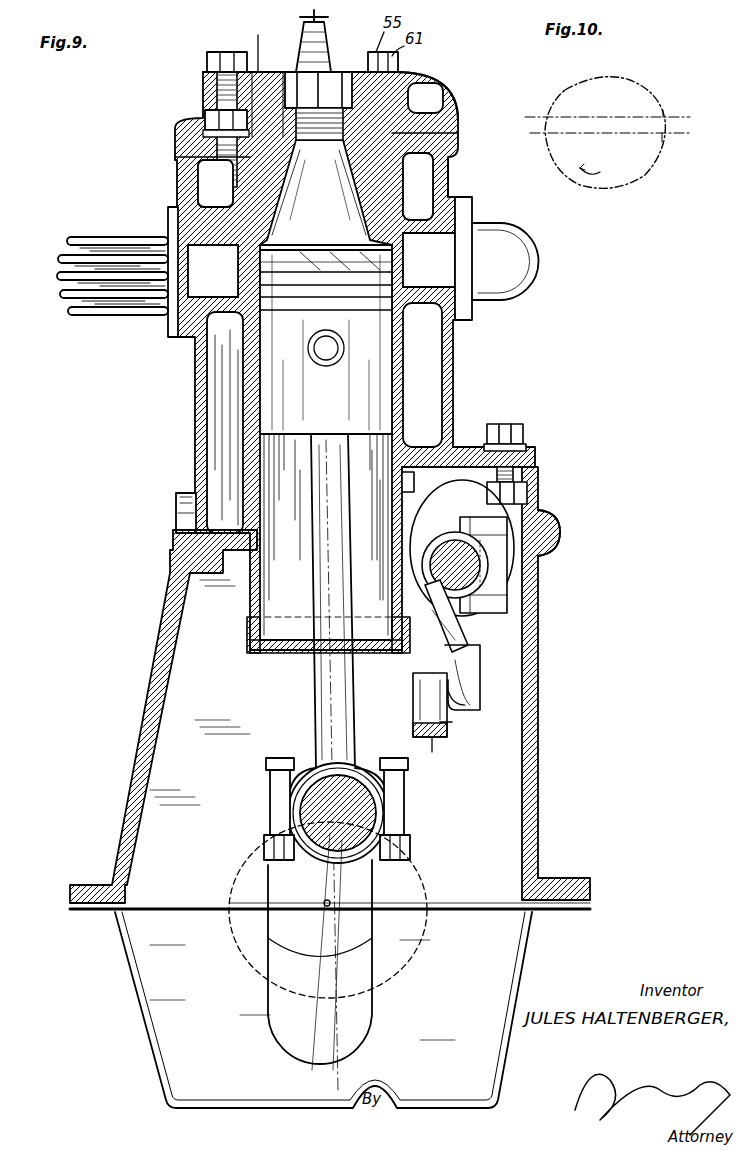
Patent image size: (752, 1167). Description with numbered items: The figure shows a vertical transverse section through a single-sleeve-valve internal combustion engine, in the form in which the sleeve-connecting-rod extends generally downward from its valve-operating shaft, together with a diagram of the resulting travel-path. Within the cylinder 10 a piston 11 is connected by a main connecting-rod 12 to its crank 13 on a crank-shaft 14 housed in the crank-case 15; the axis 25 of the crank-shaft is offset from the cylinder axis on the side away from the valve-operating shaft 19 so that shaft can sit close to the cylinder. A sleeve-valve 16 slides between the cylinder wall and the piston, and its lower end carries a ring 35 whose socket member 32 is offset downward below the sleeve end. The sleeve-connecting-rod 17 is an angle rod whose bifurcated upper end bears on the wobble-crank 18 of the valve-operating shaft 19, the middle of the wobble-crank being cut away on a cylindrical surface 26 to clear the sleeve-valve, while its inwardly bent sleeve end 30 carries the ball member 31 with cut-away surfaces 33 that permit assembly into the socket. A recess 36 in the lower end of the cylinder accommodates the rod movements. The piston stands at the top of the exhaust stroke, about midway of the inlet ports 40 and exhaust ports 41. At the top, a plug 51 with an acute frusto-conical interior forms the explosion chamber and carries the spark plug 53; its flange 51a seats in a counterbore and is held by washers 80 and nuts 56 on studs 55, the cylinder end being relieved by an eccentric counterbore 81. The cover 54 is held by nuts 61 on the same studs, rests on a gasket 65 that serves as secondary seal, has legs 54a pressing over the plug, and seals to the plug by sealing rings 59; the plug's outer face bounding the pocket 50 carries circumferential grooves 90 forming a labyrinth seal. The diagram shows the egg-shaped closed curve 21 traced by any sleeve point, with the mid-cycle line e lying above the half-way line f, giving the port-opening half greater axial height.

In FIG. 9, the cylinder 10 is at (402, 392).
In FIG. 9, the piston 11 is at (326, 342).
In FIG. 9, the main connecting-rod 12 is at (318, 716).
In FIG. 9, the crank 13 is at (398, 815).
In FIG. 9, the crank-shaft 14 is at (380, 922).
In FIG. 9, the crank-case 15 is at (545, 822).
In FIG. 9, the sleeve-valve 16 is at (250, 590).
In FIG. 9, the sleeve-connecting-rod 17 is at (483, 686).
In FIG. 9, the wobble-crank 18 is at (535, 578).
In FIG. 9, the valve-operating shaft 19 is at (455, 540).
In FIG. 10, the closed curve (travel-path) 21 is at (640, 165).
In FIG. 9, the axis of the crank-shaft 25 is at (327, 903).
In FIG. 9, the cylindrical surface 26 is at (445, 605).
In FIG. 9, the sleeve end 30 is at (468, 700).
In FIG. 9, the ball member 31 is at (455, 724).
In FIG. 9, the socket member 32 is at (434, 745).
In FIG. 9, the cut-away surfaces 33 is at (420, 712).
In FIG. 9, the ring 35 is at (250, 655).
In FIG. 9, the recess 36 is at (417, 480).
In FIG. 9, the inlet ports 40 is at (410, 267).
In FIG. 9, the exhaust ports 41 is at (234, 252).
In FIG. 9, the pocket 50 is at (432, 190).
In FIG. 9, the plug 51 is at (326, 192).
In FIG. 9, the flange 51a is at (448, 162).
In FIG. 9, the spark plug 53 is at (324, 45).
In FIG. 9, the cover 54 is at (440, 92).
In FIG. 9, the legs 54a is at (257, 44).
In FIG. 9, the studs 55 is at (203, 80).
In FIG. 9, the nuts 56 is at (205, 118).
In FIG. 9, the sealing rings 59 is at (264, 74).
In FIG. 9, the nuts 61 is at (212, 62).
In FIG. 9, the gasket 65 is at (178, 144).
In FIG. 9, the washers 80 is at (175, 132).
In FIG. 9, the eccentric counterbore 81 is at (185, 164).
In FIG. 9, the circumferential grooves 90 is at (415, 215).
In FIG. 10, the mid-cycle line e is at (688, 112).
In FIG. 10, the half-way line f is at (680, 154).